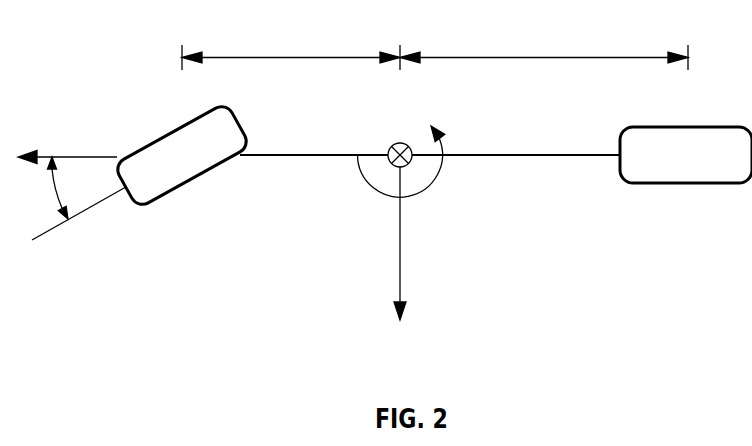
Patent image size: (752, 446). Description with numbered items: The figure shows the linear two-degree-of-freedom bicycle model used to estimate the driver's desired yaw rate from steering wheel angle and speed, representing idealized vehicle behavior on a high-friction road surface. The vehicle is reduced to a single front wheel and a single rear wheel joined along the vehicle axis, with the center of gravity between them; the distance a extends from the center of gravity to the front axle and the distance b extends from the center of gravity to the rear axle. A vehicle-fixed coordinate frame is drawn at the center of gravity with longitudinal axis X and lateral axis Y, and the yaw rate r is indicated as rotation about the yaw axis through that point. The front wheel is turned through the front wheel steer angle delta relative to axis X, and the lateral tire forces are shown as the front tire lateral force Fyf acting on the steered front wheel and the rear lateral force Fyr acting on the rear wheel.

The distance from vehicle center of gravity to front axle a is at (291, 45).
The distance from vehicle center of gravity to rear axle b is at (544, 44).
The longitudinal vehicle axis X is at (67, 141).
The lateral vehicle axis Y is at (388, 243).
The yaw rate r is at (401, 172).
The front wheel steer angle delta is at (74, 198).
The front tire lateral force in vehicle plane Fyf is at (160, 113).
The rear lateral tire force Fyr is at (688, 73).